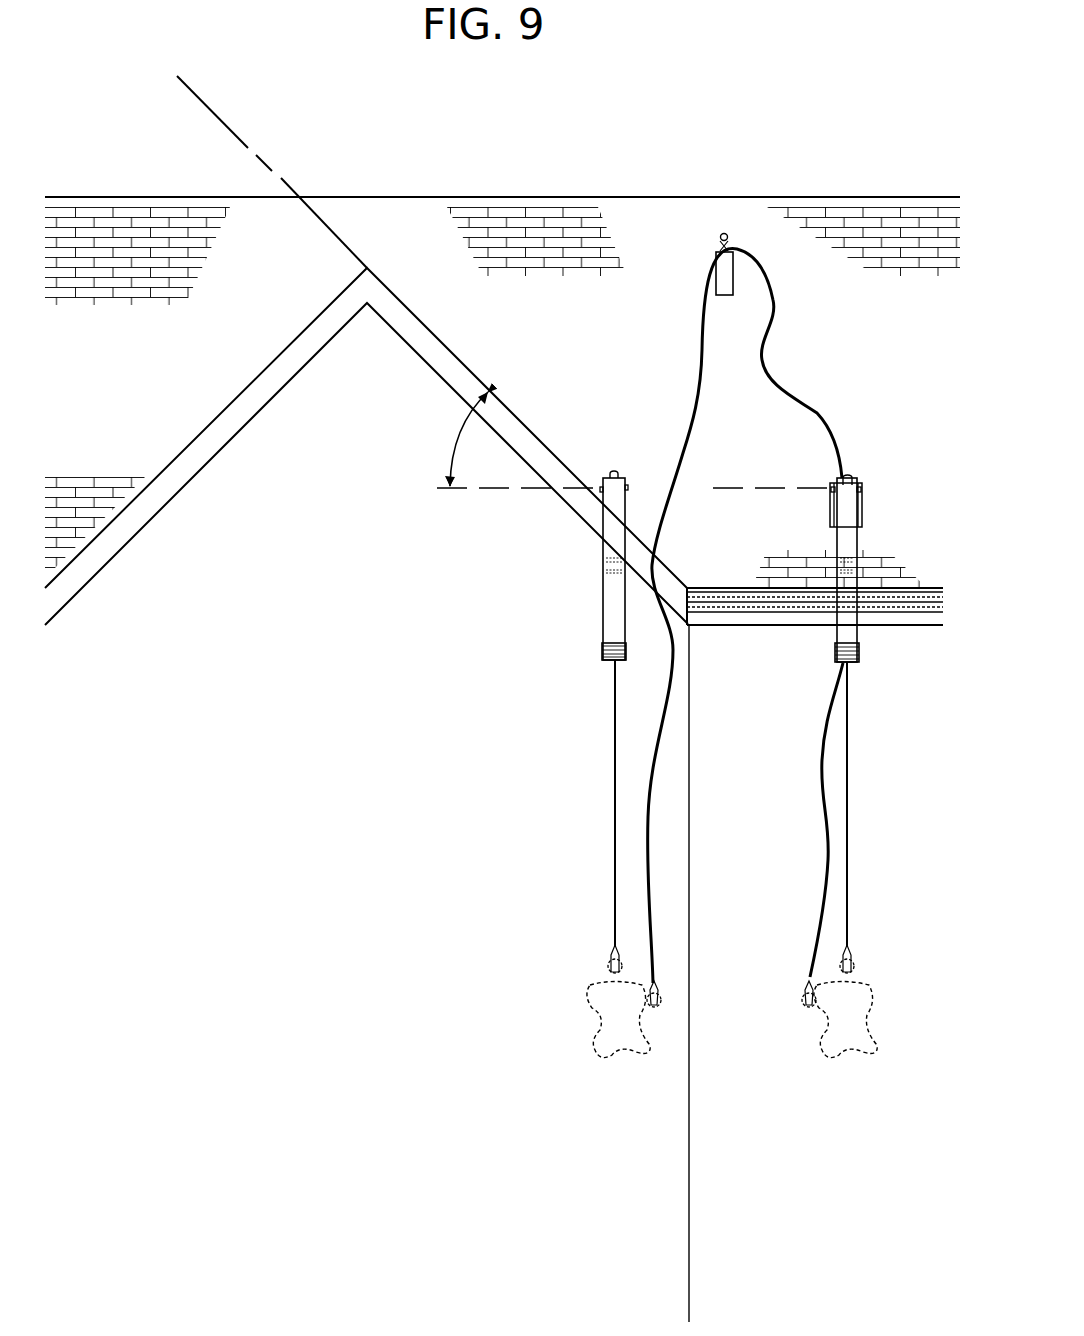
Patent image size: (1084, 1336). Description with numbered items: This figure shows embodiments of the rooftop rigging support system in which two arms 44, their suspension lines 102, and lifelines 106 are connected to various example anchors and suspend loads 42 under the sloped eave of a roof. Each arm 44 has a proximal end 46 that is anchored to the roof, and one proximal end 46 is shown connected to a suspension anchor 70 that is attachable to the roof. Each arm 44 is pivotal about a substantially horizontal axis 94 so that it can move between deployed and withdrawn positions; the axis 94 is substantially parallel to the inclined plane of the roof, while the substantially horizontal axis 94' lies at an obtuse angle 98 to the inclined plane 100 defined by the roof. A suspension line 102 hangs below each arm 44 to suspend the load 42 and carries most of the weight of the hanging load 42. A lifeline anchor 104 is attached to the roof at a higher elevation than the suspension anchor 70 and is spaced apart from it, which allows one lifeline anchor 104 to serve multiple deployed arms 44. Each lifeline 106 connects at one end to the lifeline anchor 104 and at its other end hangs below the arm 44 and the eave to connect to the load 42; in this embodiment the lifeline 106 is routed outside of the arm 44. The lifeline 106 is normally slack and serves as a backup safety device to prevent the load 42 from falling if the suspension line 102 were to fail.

The inclined plane 100 is at (213, 114).
The obtuse angle 98 is at (460, 432).
The substantially horizontal axis 94' is at (518, 528).
The substantially horizontal axis 94 is at (771, 516).
The arm 44 is at (603, 612).
The proximal end 46 is at (628, 467).
The suspension anchor 70 is at (862, 513).
The lifeline anchor 104 is at (725, 300).
The lifeline 106 is at (703, 345).
The suspension line 102 is at (613, 784).
The load 42 is at (588, 1018).